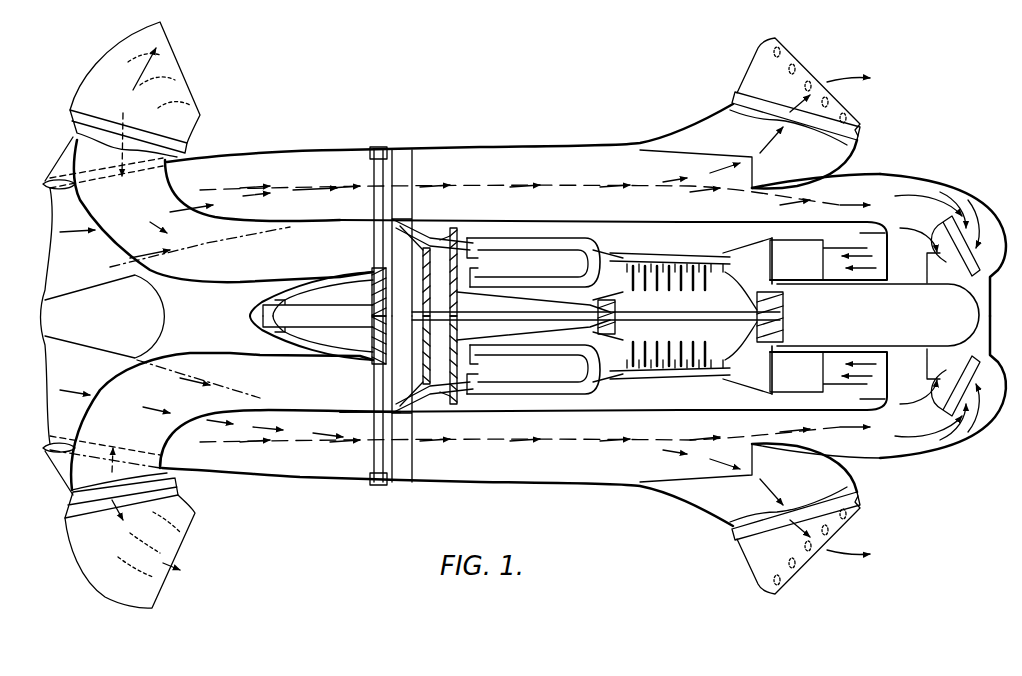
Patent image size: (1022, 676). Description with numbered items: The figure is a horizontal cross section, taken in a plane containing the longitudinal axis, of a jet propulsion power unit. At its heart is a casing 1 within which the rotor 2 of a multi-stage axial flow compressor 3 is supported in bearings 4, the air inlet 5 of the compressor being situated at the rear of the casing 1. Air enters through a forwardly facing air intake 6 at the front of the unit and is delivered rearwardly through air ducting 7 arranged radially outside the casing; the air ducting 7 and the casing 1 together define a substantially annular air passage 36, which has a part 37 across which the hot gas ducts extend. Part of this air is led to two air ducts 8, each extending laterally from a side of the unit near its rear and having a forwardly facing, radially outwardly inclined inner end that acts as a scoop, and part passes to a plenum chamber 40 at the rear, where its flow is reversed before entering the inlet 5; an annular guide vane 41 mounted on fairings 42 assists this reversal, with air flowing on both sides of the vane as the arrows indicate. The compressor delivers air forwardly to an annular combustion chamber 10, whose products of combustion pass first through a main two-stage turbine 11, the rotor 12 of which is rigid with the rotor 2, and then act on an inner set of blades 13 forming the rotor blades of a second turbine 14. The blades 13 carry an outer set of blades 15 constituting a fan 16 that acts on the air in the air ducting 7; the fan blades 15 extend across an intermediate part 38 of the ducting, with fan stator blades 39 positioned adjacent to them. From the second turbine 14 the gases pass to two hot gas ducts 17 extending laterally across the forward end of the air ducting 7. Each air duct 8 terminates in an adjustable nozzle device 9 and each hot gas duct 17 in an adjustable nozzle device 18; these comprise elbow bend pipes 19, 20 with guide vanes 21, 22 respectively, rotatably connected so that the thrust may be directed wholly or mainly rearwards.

The casing 1 is at (544, 219).
The rotor 2 is at (668, 282).
The multi-stage axial flow compressor 3 is at (716, 248).
The bearings 4 is at (612, 307).
The air inlet 5 is at (886, 263).
The air intake 6 is at (50, 238).
The air ducting 7 is at (494, 147).
The air ducts 8 is at (727, 128).
The adjustable nozzle device 9 is at (778, 69).
The annular combustion chamber 10 is at (553, 254).
The main two-stage turbine 11 is at (468, 236).
The rotor 12 is at (425, 398).
The inner set of blades 13 is at (378, 240).
The second turbine 14 is at (360, 262).
The outer set of blades 15 is at (383, 156).
The fan 16 is at (372, 146).
The hot gas ducts 17 is at (226, 217).
The adjustable nozzle device 18 is at (181, 81).
The elbow bend pipe 19 is at (758, 48).
The elbow bend pipe 20 is at (93, 70).
The guide vanes 21 is at (840, 102).
The guide vanes 22 is at (163, 33).
The annular air passage 36 is at (522, 470).
The part of the air passage 37 is at (186, 448).
The intermediate part of the air ducting 38 is at (348, 462).
The fan stator blades 39 is at (400, 463).
The plenum chamber 40 is at (993, 213).
The annular guide vane 41 is at (940, 215).
The fairings 42 is at (967, 273).